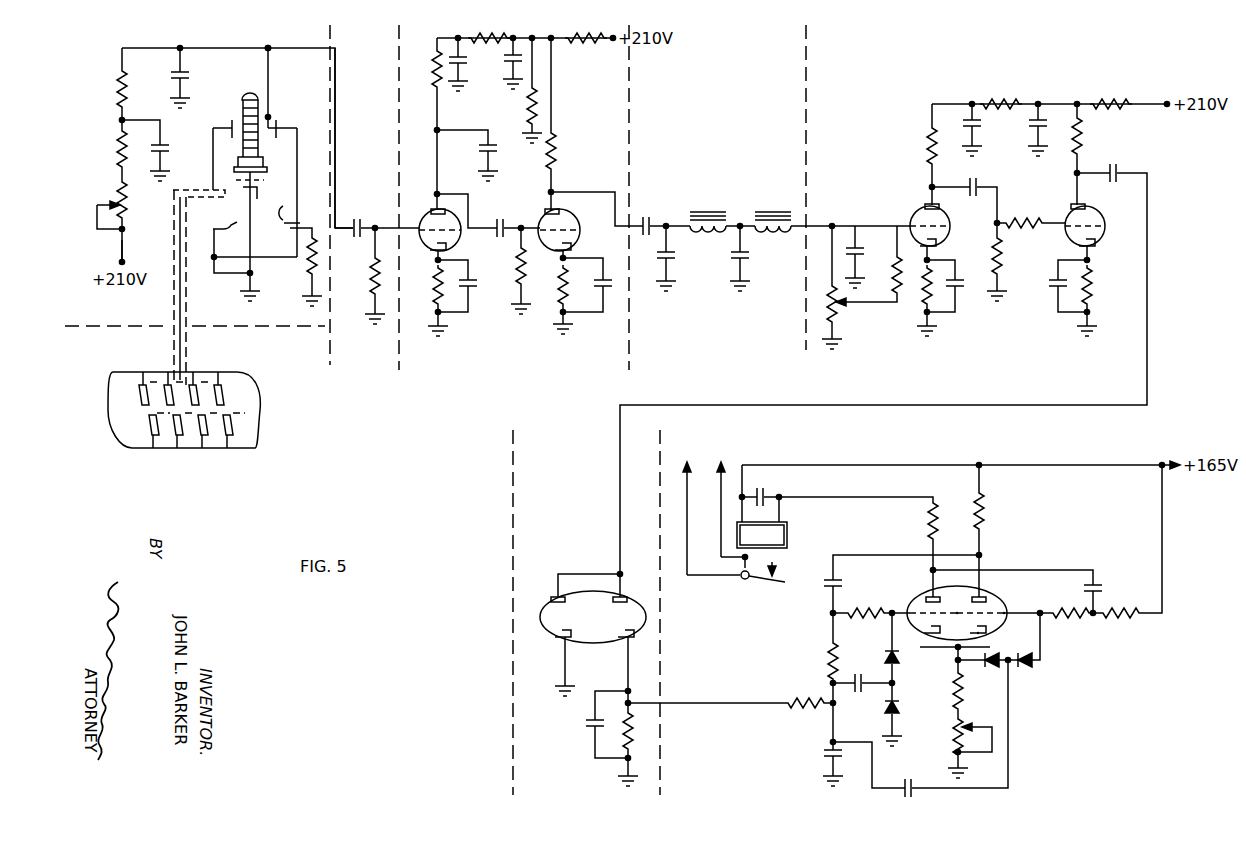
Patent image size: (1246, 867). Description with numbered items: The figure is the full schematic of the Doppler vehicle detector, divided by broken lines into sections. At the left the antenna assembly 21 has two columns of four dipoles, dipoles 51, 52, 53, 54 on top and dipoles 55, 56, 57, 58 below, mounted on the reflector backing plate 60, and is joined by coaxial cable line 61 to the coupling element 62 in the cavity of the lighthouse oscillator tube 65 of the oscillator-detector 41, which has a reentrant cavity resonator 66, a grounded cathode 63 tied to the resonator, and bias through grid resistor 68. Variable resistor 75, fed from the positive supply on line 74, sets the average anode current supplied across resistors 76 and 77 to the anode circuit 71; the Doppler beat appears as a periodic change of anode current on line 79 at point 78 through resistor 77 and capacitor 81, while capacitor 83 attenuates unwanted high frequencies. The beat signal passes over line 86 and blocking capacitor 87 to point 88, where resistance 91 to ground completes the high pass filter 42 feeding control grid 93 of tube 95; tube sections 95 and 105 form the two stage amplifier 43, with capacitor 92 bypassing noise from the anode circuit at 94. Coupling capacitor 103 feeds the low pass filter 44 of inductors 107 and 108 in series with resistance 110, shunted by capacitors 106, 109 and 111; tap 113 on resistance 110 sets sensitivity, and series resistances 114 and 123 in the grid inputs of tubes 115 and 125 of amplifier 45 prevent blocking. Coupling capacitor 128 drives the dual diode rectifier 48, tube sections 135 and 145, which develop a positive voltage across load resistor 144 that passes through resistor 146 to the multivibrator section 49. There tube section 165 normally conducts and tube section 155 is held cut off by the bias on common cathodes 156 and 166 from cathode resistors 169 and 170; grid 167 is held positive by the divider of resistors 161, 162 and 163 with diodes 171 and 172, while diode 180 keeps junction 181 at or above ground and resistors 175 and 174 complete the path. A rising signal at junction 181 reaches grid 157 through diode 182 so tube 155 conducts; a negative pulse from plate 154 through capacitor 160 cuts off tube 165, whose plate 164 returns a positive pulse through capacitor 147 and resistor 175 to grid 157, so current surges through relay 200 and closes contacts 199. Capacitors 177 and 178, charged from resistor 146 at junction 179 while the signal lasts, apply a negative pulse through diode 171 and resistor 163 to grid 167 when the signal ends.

The oscillator-detector 41 is at (97, 60).
The resistor 77 is at (116, 85).
The capacitor 83 is at (187, 78).
The point 78 is at (270, 46).
The line 79 is at (270, 74).
The anode circuit 71 is at (242, 114).
The ultra high frequency oscillator tube 65 is at (276, 129).
The resistor 76 is at (118, 144).
The capacitor 81 is at (165, 150).
The coupling element 62 is at (220, 186).
The variable resistor 75 is at (122, 206).
The line 74 is at (120, 242).
The cavity resonator 66 is at (214, 222).
The cathode 63 is at (216, 243).
The grid resistor 68 is at (302, 267).
The coaxial cable line 61 is at (174, 304).
The dipole 51 is at (143, 374).
The dipole 52 is at (168, 374).
The dipole 53 is at (193, 374).
The dipole 54 is at (218, 374).
The dipole 55 is at (151, 449).
The dipole 56 is at (177, 449).
The dipole 57 is at (202, 449).
The dipole 58 is at (228, 449).
The reflector backing plate 60 is at (261, 401).
The antenna assembly 21 is at (194, 504).
The high pass filter 42 is at (375, 108).
The line 86 is at (335, 153).
The blocking capacitor 87 is at (355, 220).
The point 88 is at (377, 224).
The resistance 91 is at (372, 276).
The amplifier 43 is at (596, 101).
The anode circuit point 94 is at (436, 128).
The capacitor 92 is at (497, 152).
The tube 95 is at (434, 197).
The control grid 93 is at (451, 235).
The tube section 105 is at (573, 197).
The low pass filter 44 is at (733, 155).
The coupling capacitor 103 is at (645, 217).
The inductor 107 is at (708, 208).
The inductor 108 is at (773, 208).
The capacitor 106 is at (675, 257).
The capacitor 109 is at (749, 257).
The amplifier 45 is at (1016, 59).
The tube 115 is at (925, 202).
The capacitor 111 is at (865, 250).
The resistance 110 is at (832, 281).
The tap 113 is at (837, 318).
The load resistance 114 is at (869, 266).
The series resistance 123 is at (1030, 220).
The tube 125 is at (1096, 207).
The coupling capacitor 128 is at (1117, 166).
The rectifier 48 is at (574, 513).
The diode rectifier 135 is at (556, 596).
The diode rectifier 145 is at (624, 596).
The load resistor 144 is at (622, 754).
The resistor 146 is at (730, 713).
The relay stage 49 is at (901, 448).
The relay 200 is at (762, 506).
The contacts 199 is at (786, 577).
The capacitor 147 is at (824, 584).
The resistor 175 is at (871, 622).
The grid 157 is at (908, 613).
The tube section 155 is at (921, 597).
The plate 154 is at (942, 598).
The plate 164 is at (996, 590).
The tube section 165 is at (1005, 589).
The grid 167 is at (1003, 609).
The capacitor 160 is at (1101, 589).
The resistor 162 is at (1072, 620).
The resistor 161 is at (1127, 618).
The resistor 174 is at (831, 659).
The diode 182 is at (884, 661).
The cathode 156 is at (912, 659).
The cathode 166 is at (989, 633).
The diode 172 is at (990, 664).
The diode 171 is at (1023, 667).
The resistor 163 is at (1037, 653).
The junction 181 is at (894, 684).
The junction 179 is at (858, 696).
The diode 180 is at (899, 710).
The cathode load resistor 169 is at (961, 700).
The adjustable resistor 170 is at (952, 731).
The capacitor 178 is at (826, 752).
The capacitor 177 is at (907, 785).